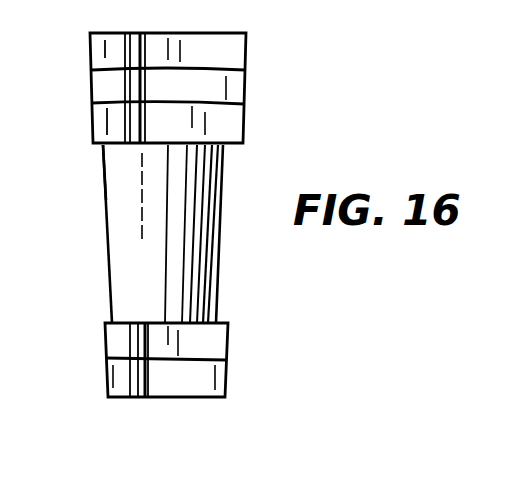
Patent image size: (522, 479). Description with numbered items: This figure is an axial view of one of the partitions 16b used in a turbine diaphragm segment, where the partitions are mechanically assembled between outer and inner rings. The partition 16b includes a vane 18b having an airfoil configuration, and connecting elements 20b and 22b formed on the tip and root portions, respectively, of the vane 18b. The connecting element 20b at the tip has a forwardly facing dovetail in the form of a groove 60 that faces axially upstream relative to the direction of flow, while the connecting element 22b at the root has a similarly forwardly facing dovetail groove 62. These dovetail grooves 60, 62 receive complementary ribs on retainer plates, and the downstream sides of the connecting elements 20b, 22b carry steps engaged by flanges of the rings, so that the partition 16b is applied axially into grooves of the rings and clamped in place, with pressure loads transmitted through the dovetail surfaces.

The partition 16b is at (118, 258).
The vane 18b is at (113, 170).
The connecting element 20b is at (234, 55).
The connecting element 22b is at (214, 343).
The dovetail groove 60 is at (234, 98).
The dovetail groove 62 is at (152, 343).